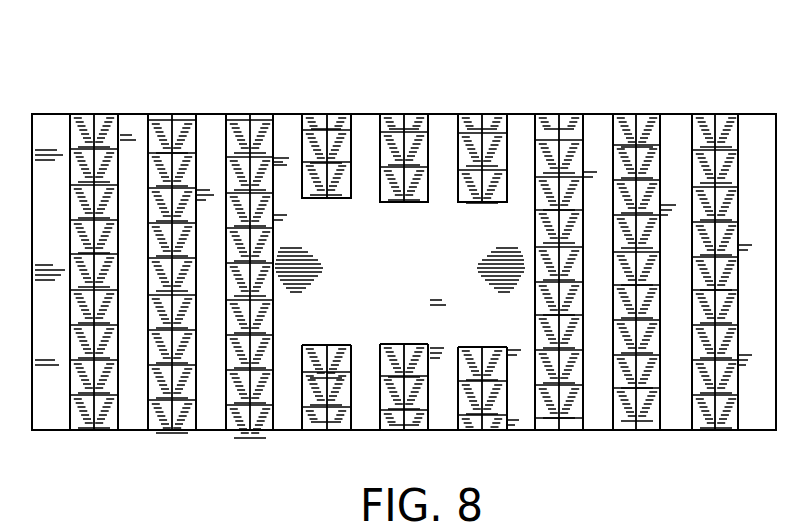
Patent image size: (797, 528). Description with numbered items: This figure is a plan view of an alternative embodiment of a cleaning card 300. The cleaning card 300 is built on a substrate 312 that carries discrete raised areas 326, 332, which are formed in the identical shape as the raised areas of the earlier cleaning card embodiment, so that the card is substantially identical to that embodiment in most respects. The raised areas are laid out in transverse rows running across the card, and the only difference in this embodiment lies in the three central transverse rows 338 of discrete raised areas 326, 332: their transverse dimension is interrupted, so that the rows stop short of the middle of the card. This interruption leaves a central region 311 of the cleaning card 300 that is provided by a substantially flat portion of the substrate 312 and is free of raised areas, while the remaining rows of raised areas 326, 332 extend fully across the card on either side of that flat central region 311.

The cleaning card 300 is at (404, 258).
The central region 311 is at (427, 286).
The substrate 312 is at (533, 116).
The discrete raised areas 326 is at (260, 134).
The discrete raised areas 332 is at (405, 271).
The central transverse rows 338 is at (482, 470).